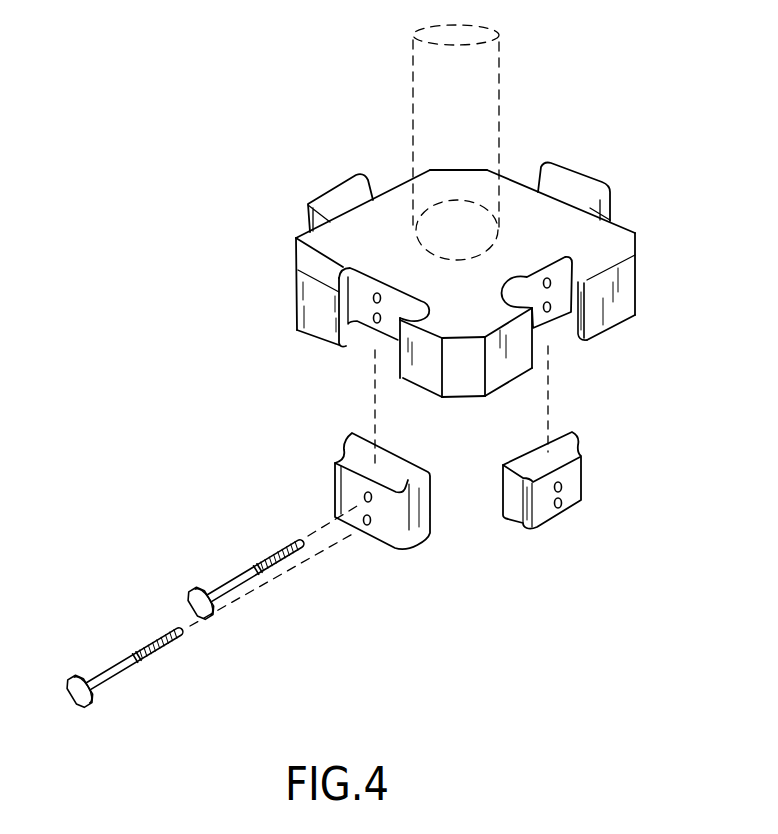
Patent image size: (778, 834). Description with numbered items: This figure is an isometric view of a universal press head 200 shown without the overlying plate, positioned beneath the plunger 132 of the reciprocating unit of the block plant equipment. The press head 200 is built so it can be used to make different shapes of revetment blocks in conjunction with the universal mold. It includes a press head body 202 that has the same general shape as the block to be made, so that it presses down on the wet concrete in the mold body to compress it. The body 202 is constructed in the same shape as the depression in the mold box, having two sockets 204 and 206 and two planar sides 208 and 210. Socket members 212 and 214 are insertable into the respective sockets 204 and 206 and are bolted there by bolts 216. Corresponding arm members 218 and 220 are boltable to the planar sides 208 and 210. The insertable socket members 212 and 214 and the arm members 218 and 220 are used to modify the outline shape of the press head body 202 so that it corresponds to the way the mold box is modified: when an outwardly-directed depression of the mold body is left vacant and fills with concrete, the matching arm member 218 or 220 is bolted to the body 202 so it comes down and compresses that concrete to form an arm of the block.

The press head 200 is at (314, 86).
The plunger 132 is at (500, 86).
The press head body 202 is at (620, 237).
The socket 204 is at (370, 283).
The socket 206 is at (530, 277).
The planar side 208 is at (512, 178).
The planar side 210 is at (398, 183).
The socket member 212 is at (397, 467).
The socket member 214 is at (572, 432).
The bolts 216 is at (219, 587).
The arm member 218 is at (590, 172).
The arm member 220 is at (332, 202).